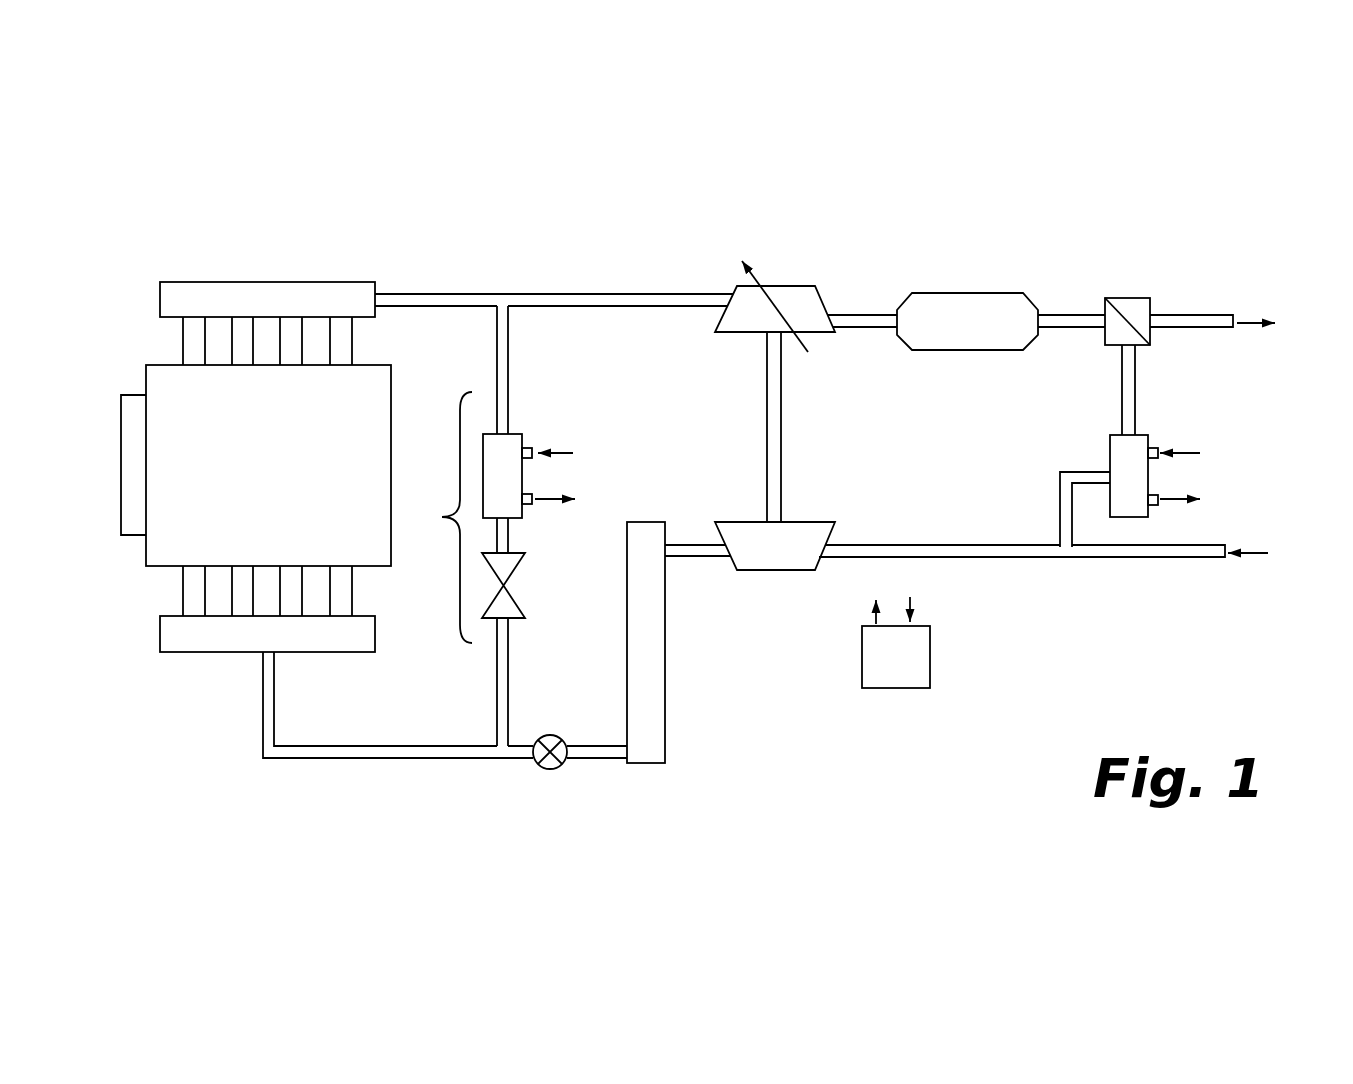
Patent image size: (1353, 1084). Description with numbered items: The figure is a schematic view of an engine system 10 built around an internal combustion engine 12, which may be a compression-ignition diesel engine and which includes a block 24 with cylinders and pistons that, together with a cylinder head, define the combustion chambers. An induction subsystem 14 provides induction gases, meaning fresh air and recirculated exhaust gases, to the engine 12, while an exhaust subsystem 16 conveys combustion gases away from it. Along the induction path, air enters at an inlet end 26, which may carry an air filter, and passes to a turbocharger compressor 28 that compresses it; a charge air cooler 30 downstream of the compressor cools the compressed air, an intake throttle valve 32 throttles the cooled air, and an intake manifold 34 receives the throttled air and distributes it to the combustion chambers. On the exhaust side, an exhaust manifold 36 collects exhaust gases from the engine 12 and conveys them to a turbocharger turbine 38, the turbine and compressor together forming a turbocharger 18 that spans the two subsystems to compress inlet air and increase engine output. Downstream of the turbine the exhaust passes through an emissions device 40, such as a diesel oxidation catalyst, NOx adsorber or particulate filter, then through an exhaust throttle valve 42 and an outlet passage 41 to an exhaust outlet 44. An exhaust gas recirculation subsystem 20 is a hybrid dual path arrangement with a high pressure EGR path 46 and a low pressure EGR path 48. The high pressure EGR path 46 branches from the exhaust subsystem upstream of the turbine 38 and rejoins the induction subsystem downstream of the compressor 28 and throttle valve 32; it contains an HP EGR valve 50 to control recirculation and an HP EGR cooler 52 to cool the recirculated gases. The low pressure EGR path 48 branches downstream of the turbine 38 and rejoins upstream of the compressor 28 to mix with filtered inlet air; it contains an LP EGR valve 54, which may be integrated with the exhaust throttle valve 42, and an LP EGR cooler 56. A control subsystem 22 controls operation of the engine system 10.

The engine system 10 is at (596, 201).
The internal combustion engine 12 is at (256, 512).
The induction subsystem 14 is at (248, 772).
The exhaust subsystem 16 is at (277, 233).
The turbocharger 18 is at (822, 340).
The exhaust gas recirculation subsystem 20 is at (543, 440).
The control subsystem 22 is at (885, 669).
The block 24 is at (145, 383).
The inlet end 26 is at (1208, 558).
The turbocharger compressor 28 is at (755, 570).
The charge air cooler 30 is at (665, 720).
The intake throttle valve 32 is at (553, 767).
The intake manifold 34 is at (160, 633).
The exhaust manifold 36 is at (343, 282).
The turbocharger turbine 38 is at (810, 286).
The emissions device 40 is at (977, 293).
The exhaust outlet passage 41 is at (1200, 315).
The exhaust throttle valve 42 is at (1130, 298).
The exhaust outlet 44 is at (1240, 317).
The high pressure EGR path 46 is at (442, 517).
The low pressure EGR path 48 is at (1040, 503).
The HP EGR valve 50 is at (515, 567).
The HP EGR cooler 52 is at (515, 433).
The LP EGR valve 54 is at (1103, 338).
The LP EGR cooler 56 is at (1148, 510).